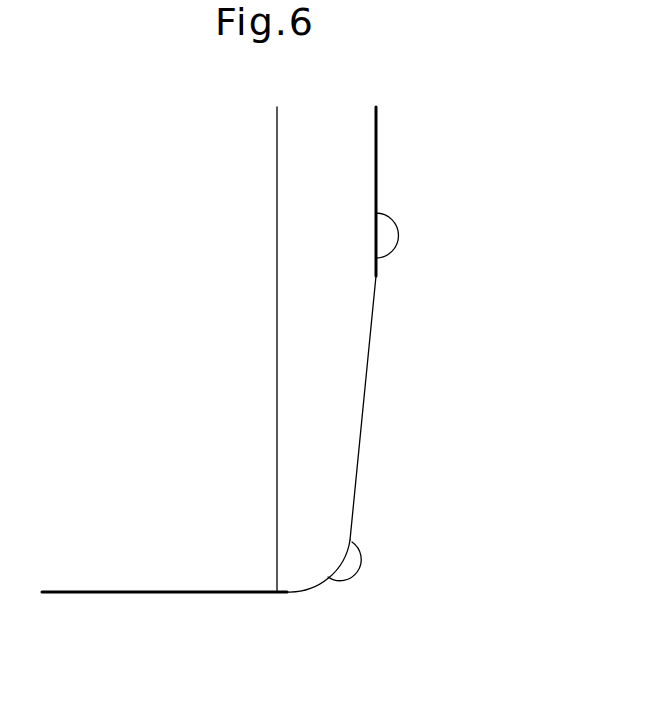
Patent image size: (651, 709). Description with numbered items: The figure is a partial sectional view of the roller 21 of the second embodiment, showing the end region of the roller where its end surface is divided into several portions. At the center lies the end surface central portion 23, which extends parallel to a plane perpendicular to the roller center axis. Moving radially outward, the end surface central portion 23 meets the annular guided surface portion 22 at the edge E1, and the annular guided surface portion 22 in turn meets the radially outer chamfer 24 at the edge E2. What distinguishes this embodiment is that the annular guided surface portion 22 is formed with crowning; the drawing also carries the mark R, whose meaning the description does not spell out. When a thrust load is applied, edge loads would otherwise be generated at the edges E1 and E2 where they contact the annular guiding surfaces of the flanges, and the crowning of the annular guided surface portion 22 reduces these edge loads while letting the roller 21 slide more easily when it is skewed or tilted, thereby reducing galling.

The roller 21 is at (125, 580).
The annular guided surface portion 22 is at (364, 398).
The end surface central portion 23 is at (377, 158).
The radially outer chamfer 24 is at (327, 578).
The edge E1 is at (376, 213).
The edge E2 is at (328, 575).
The radius of curvature R is at (376, 275).